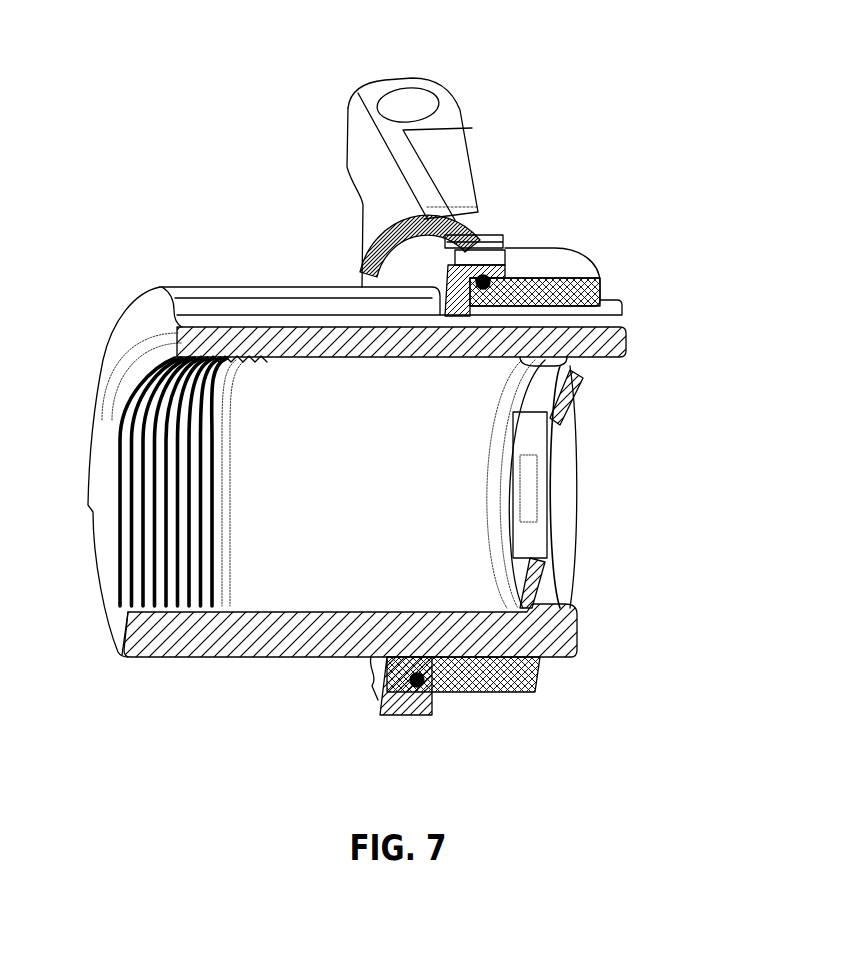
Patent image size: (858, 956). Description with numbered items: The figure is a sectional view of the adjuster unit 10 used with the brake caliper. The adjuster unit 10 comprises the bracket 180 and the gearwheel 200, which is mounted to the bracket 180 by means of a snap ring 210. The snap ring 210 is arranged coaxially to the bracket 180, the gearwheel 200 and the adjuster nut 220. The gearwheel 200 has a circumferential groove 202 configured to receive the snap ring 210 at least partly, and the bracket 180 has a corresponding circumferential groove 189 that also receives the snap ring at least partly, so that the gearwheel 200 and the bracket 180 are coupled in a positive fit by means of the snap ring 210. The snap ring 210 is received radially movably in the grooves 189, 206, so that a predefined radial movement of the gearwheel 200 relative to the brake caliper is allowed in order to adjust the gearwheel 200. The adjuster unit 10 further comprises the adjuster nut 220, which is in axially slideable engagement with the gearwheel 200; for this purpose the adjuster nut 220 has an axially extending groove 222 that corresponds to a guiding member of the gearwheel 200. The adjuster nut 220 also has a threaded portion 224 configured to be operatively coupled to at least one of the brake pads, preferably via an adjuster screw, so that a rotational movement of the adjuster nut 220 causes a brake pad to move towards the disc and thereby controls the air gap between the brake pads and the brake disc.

The adjuster unit 10 is at (455, 402).
The bracket 180 is at (362, 145).
The circumferential groove 189 is at (420, 675).
The gearwheel 200 is at (362, 278).
The circumferential groove 202 is at (375, 688).
The groove 206 is at (476, 286).
The snap ring 210 is at (497, 246).
The adjuster nut 220 is at (150, 322).
The axially extending groove 222 is at (240, 300).
The threaded portion 224 is at (152, 606).